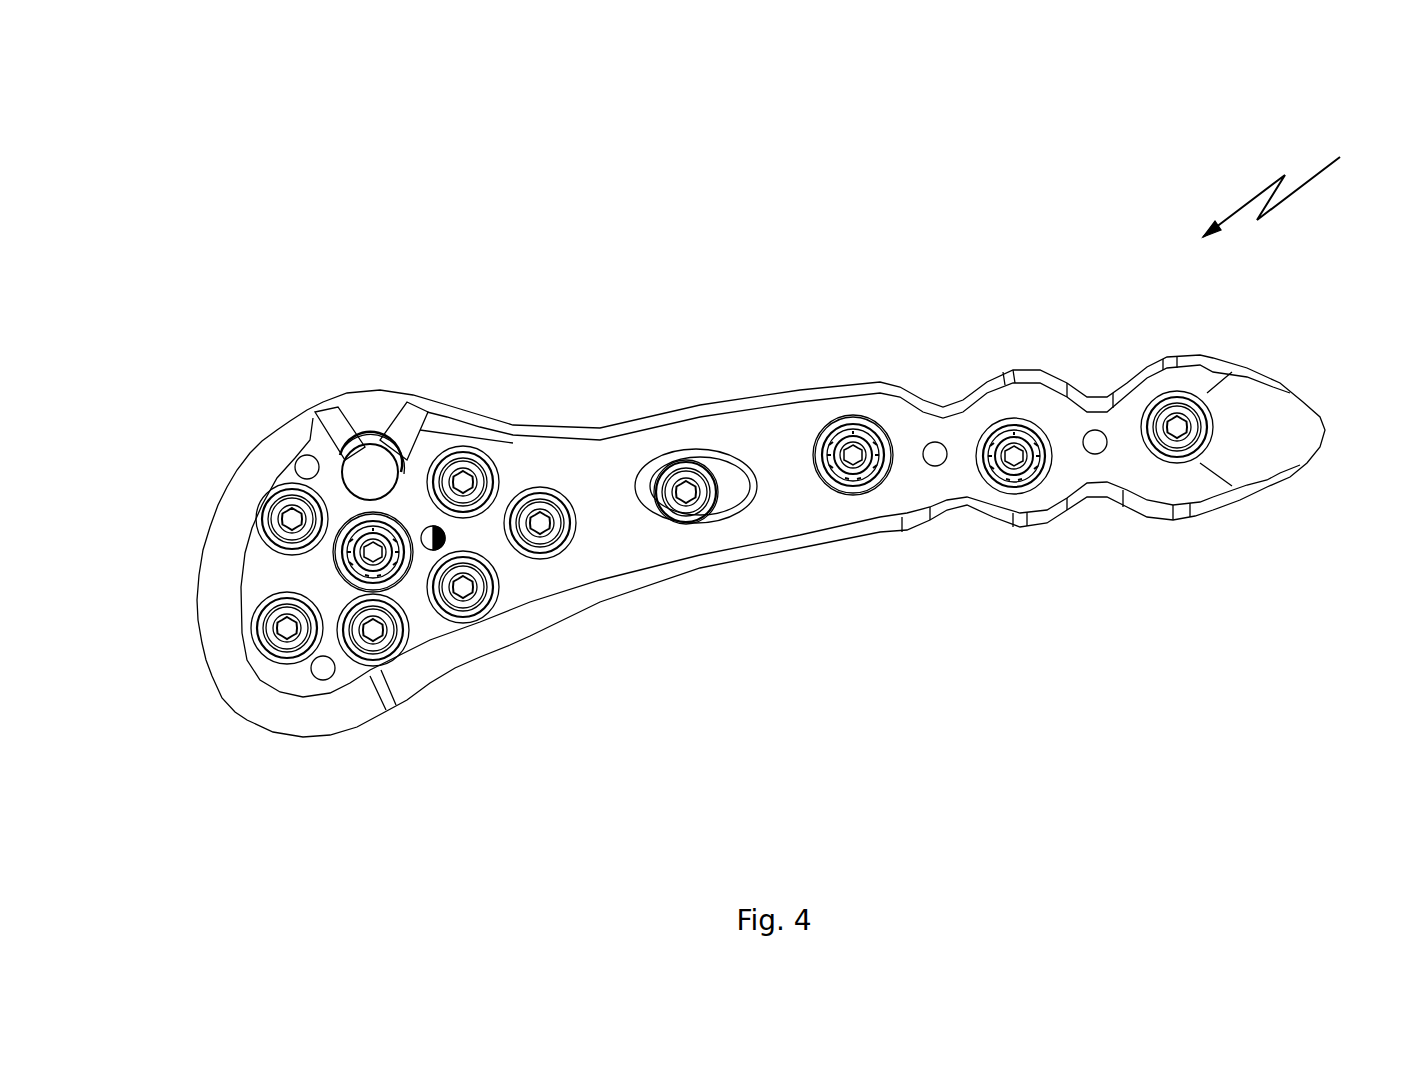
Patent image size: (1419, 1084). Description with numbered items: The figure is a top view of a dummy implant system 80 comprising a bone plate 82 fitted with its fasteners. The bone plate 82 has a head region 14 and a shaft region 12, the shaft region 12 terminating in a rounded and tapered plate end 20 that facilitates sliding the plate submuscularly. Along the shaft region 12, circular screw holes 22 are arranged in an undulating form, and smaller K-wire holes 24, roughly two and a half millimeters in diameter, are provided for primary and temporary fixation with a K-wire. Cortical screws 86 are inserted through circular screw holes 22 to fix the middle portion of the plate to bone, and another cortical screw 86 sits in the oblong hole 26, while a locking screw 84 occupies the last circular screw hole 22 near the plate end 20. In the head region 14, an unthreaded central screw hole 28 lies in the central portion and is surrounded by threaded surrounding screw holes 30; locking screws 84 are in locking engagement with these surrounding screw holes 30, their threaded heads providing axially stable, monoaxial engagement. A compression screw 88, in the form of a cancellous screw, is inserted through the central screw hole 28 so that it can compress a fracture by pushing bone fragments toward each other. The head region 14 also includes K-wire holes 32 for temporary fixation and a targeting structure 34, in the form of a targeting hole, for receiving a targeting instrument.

The shaft region 12 is at (945, 465).
The head region 14 is at (507, 567).
The plate end 20 is at (1297, 413).
The circular screw holes 22 is at (856, 452).
The K-wire holes 24 is at (1100, 450).
The oblong hole 26 is at (723, 472).
The central screw hole 28 is at (345, 566).
The surrounding screw holes 30 is at (252, 633).
The K-wire holes 32 is at (329, 679).
The targeting structure 34 is at (362, 466).
The implant system 80 is at (1292, 183).
The bone plate 82 is at (788, 428).
The locking screws 84 is at (465, 470).
The cortical screws 86 is at (697, 516).
The compression screw 88 is at (393, 580).